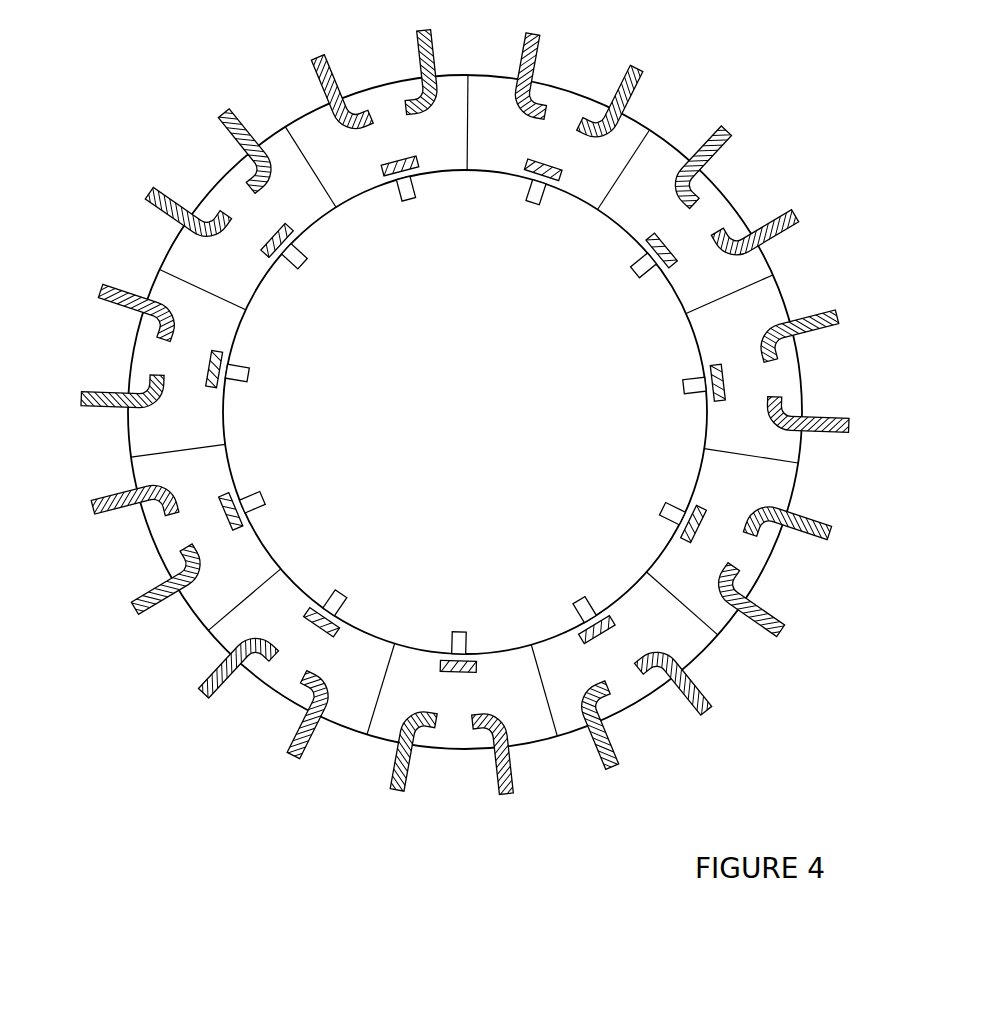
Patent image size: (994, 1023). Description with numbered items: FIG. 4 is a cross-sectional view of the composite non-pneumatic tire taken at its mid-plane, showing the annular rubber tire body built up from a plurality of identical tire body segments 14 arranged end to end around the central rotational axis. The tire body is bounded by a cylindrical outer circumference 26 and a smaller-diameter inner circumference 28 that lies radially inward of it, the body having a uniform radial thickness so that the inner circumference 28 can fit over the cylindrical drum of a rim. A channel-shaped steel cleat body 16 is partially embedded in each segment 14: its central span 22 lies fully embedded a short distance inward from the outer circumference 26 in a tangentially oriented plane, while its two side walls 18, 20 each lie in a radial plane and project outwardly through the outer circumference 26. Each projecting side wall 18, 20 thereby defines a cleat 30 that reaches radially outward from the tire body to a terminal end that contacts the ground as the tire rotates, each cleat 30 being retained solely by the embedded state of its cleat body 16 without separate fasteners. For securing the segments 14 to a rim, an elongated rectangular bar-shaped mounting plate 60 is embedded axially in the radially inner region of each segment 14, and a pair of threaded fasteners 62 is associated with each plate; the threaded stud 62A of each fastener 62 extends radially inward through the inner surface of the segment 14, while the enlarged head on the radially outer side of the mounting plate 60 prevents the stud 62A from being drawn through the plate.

The tire body segment 14 is at (465, 394).
The cleat body 16 is at (98, 286).
The side wall 18 is at (100, 410).
The side wall 20 is at (123, 292).
The central span 22 is at (157, 333).
The outer circumference 26 is at (555, 82).
The inner circumference 28 is at (607, 226).
The cleat 30 is at (98, 302).
The mounting plate 60 is at (390, 172).
The threaded fastener 62 is at (416, 201).
The threaded stud 62A is at (408, 202).